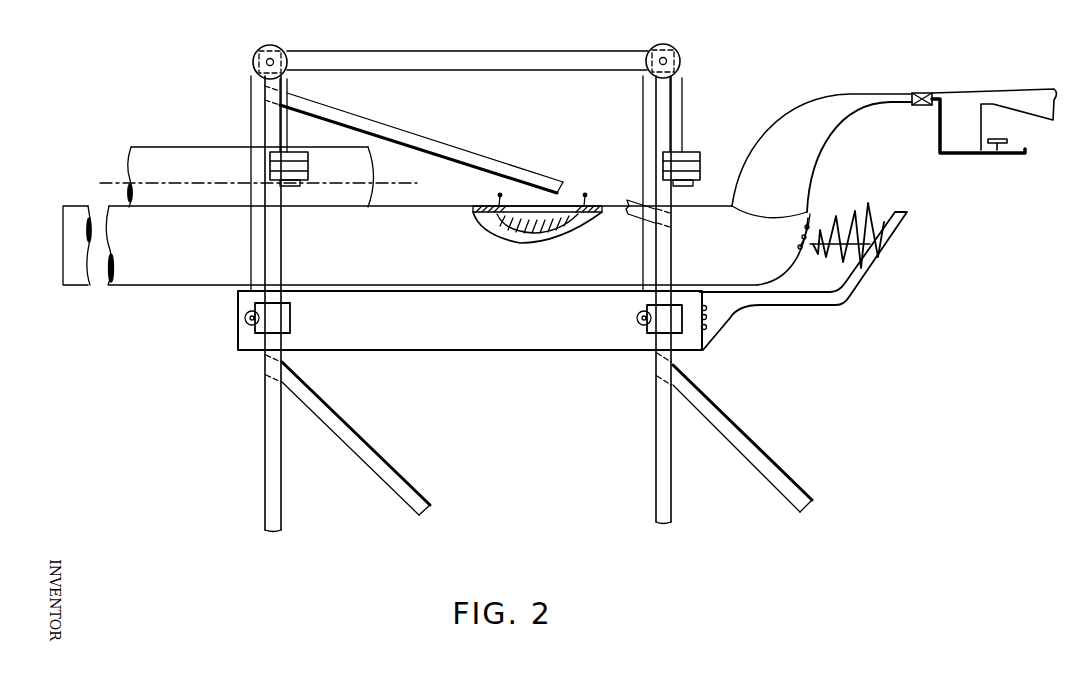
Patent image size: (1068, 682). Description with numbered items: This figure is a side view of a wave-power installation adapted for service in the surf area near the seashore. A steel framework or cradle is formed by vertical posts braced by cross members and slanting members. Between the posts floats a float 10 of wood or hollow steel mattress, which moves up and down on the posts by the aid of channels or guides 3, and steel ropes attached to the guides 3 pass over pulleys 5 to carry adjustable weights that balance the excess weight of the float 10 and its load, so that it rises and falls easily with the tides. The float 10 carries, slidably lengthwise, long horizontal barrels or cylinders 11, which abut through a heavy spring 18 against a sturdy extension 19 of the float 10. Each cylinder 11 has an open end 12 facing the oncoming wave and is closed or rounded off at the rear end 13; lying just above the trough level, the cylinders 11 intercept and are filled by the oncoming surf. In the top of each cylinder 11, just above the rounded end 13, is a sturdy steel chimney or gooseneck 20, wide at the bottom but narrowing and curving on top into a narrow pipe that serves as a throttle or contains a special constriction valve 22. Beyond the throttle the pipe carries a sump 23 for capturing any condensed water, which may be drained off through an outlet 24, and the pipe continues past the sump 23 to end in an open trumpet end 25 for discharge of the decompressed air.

The guide 3 is at (286, 318).
The pulley 5 is at (254, 57).
The float 10 is at (508, 331).
The barrel 11 is at (195, 147).
The open end 12 is at (70, 257).
The rear end 13 is at (780, 268).
The spring 18 is at (865, 217).
The extension 19 is at (893, 256).
The gooseneck 20 is at (798, 108).
The constriction valve 22 is at (918, 92).
The sump 23 is at (943, 128).
The outlet 24 is at (1013, 148).
The trumpet end 25 is at (1056, 92).